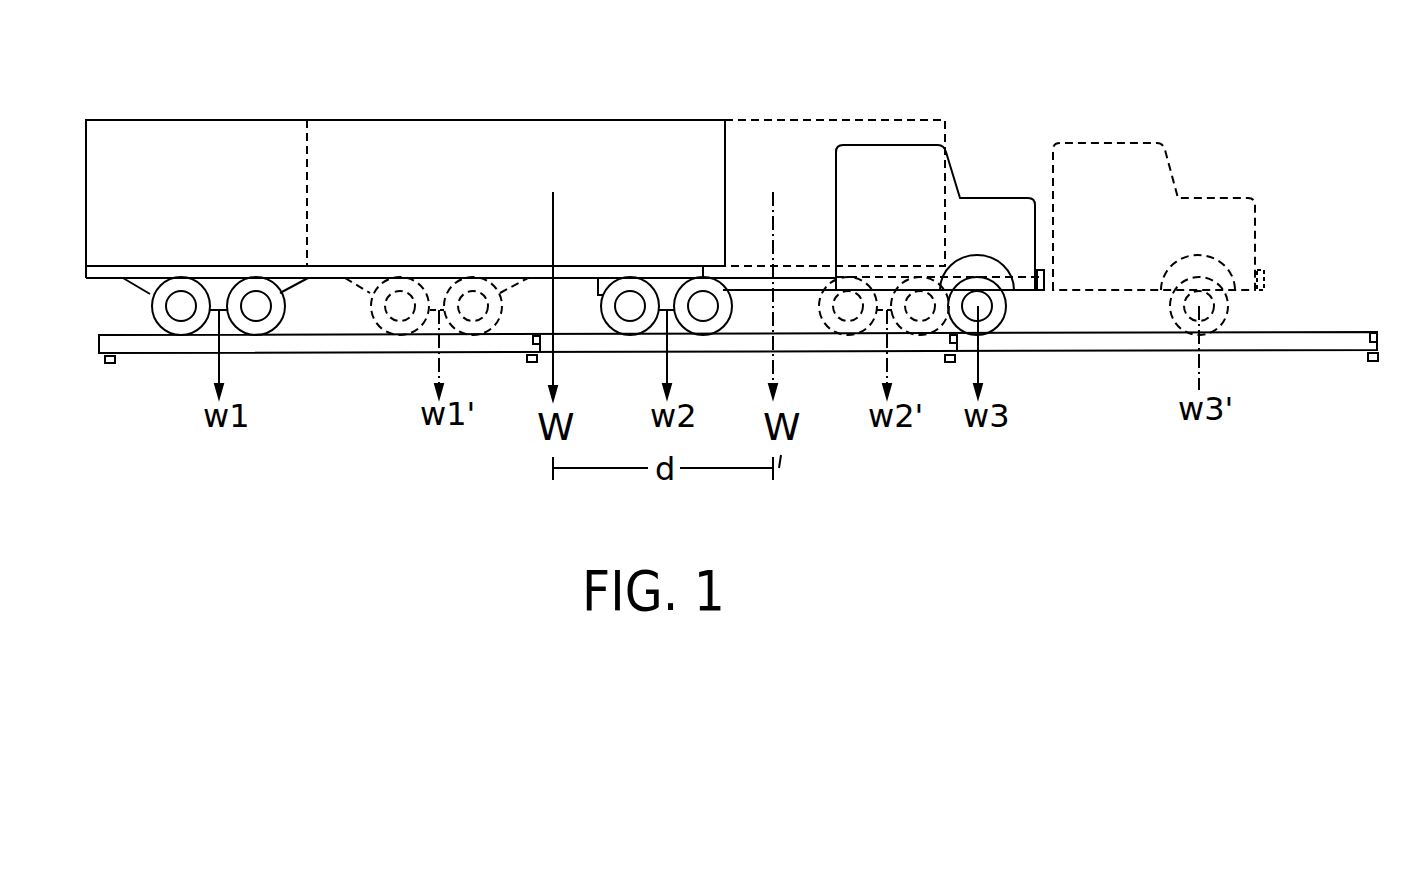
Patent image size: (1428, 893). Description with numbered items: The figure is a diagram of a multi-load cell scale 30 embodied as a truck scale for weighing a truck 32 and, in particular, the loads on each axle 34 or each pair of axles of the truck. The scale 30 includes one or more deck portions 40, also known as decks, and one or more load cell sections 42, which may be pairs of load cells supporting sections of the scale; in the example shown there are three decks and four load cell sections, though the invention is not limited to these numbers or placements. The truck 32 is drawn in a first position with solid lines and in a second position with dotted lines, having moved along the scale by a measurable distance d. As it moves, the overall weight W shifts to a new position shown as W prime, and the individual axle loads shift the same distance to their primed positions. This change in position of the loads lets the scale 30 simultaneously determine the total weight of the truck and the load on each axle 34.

The multi-load cell scale 30 is at (1380, 322).
The truck 32 is at (423, 145).
The axle 34 is at (177, 305).
The deck portions 40 is at (342, 348).
The load cell sections 42 is at (114, 363).